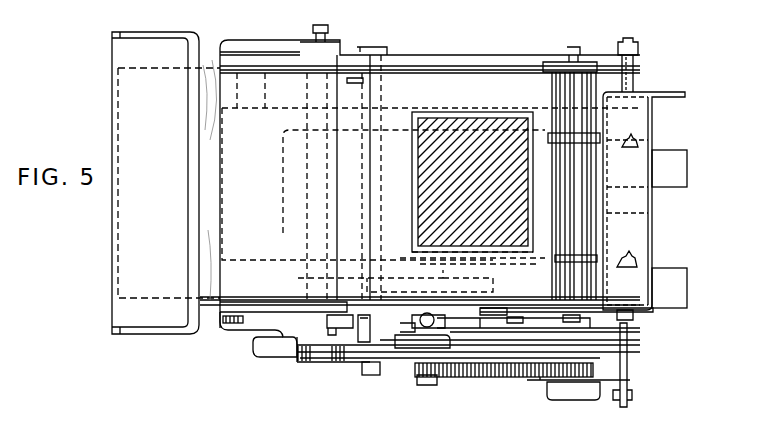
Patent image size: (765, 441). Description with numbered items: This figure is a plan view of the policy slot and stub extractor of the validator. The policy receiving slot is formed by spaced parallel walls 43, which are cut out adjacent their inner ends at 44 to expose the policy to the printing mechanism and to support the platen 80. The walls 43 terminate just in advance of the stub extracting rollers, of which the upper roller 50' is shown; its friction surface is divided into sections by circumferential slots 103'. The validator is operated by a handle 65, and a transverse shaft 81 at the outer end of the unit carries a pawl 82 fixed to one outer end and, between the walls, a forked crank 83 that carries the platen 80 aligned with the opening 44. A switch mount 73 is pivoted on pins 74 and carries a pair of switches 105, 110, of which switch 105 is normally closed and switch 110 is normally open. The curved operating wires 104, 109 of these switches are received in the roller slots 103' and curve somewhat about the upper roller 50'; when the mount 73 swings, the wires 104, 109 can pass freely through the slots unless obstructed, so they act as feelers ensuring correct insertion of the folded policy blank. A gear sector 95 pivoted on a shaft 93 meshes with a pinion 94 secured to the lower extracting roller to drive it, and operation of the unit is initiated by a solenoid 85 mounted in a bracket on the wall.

The handle 65 is at (143, 333).
The forked crank 83 is at (283, 176).
The platen 80 is at (483, 146).
The cut out 44 is at (533, 228).
The circumferential slot 103' is at (619, 164).
The pin 74 is at (638, 78).
The switch mount 73 is at (650, 137).
The operating wire 109 is at (603, 137).
The operating wire 104 is at (603, 254).
The switch 110 is at (670, 170).
The switch 105 is at (672, 293).
The stub extracting roller 50' is at (646, 210).
The slot wall 43 is at (543, 214).
The shaft 81 is at (247, 329).
The pawl 82 is at (275, 350).
The shaft 93 is at (427, 379).
The pinion 94 is at (594, 372).
The gear sector 95 is at (505, 370).
The solenoid 85 is at (580, 393).